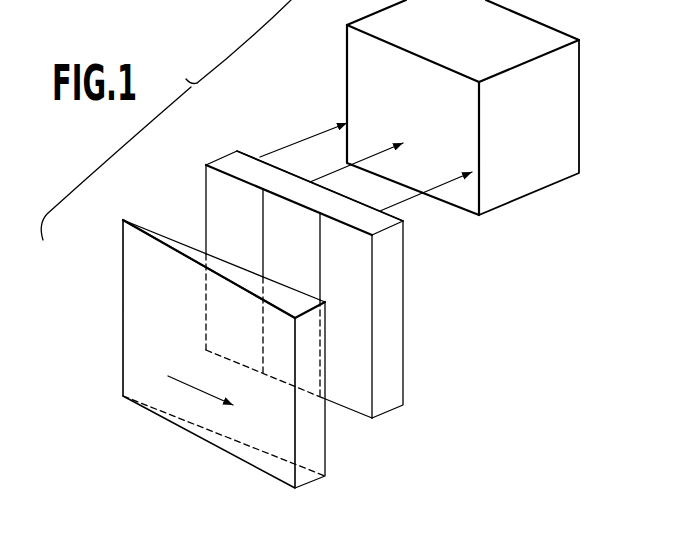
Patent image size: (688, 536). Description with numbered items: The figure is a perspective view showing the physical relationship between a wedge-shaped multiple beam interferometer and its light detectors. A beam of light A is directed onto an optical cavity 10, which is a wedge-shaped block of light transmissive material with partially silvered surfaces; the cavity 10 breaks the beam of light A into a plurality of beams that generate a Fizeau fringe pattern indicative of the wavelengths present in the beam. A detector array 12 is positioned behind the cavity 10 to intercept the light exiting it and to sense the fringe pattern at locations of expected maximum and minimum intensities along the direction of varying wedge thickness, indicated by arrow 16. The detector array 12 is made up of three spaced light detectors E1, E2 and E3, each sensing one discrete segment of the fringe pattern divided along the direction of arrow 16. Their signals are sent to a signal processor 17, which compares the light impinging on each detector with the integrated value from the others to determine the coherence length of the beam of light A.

The optical cavity 10 is at (312, 480).
The detector array 12 is at (329, 284).
The arrow 16 is at (168, 376).
The signal processor 17 is at (452, 39).
The beam of light A is at (128, 415).
The light detector E1 is at (351, 279).
The light detector E2 is at (299, 304).
The light detector E3 is at (241, 281).